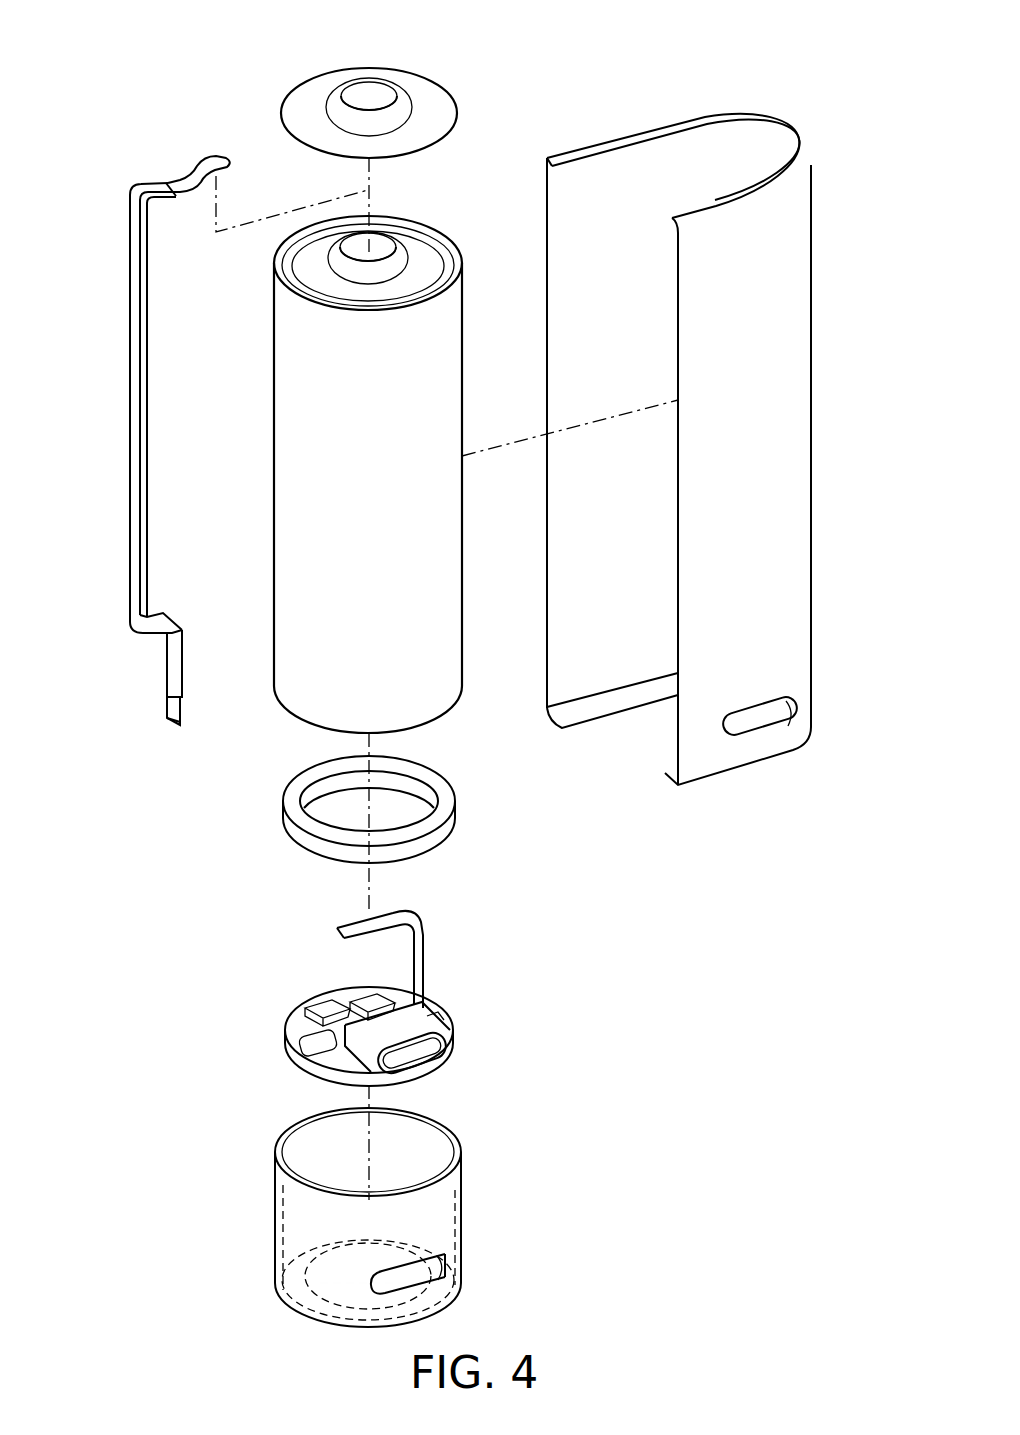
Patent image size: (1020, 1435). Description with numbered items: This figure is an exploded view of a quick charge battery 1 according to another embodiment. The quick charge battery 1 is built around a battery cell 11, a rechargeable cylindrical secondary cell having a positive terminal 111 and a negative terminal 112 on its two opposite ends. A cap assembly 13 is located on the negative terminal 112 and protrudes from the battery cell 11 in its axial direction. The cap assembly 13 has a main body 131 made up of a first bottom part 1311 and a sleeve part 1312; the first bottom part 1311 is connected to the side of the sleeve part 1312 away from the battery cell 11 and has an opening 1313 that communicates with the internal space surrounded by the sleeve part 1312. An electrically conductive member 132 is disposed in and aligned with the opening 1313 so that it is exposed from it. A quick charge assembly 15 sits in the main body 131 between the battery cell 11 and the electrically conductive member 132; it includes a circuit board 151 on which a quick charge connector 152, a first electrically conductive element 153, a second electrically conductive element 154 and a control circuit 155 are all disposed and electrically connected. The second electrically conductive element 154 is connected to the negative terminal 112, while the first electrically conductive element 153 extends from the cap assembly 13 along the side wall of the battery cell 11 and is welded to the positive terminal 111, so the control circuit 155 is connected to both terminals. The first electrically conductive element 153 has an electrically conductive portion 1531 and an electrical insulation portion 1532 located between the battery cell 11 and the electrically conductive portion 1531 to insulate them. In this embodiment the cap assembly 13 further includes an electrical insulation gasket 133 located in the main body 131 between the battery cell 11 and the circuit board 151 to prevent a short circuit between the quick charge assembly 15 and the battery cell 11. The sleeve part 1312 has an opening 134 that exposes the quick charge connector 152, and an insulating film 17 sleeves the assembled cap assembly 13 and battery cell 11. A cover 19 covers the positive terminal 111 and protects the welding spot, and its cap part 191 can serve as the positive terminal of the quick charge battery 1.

The quick charge battery 1 is at (92, 39).
The battery cell 11 is at (406, 476).
The positive terminal 111 is at (378, 247).
The negative terminal 112 is at (445, 712).
The cap assembly 13 is at (342, 1223).
The main body 131 is at (280, 1217).
The first bottom part 1311 is at (280, 1246).
The sleeve part 1312 is at (276, 1212).
The opening 1313 is at (300, 1276).
The electrically conductive member 132 is at (352, 1283).
The electrical insulation gasket 133 is at (455, 815).
The opening 134 is at (446, 1280).
The quick charge assembly 15 is at (404, 1004).
The circuit board 151 is at (447, 1022).
The quick charge connector 152 is at (432, 1057).
The first electrically conductive element 153 is at (142, 394).
The electrically conductive portion 1531 is at (190, 168).
The electrical insulation portion 1532 is at (135, 230).
The second electrically conductive element 154 is at (424, 936).
The control circuit 155 is at (322, 1008).
The insulating film 17 is at (790, 148).
The cover 19 is at (369, 88).
The cap part 191 is at (370, 96).